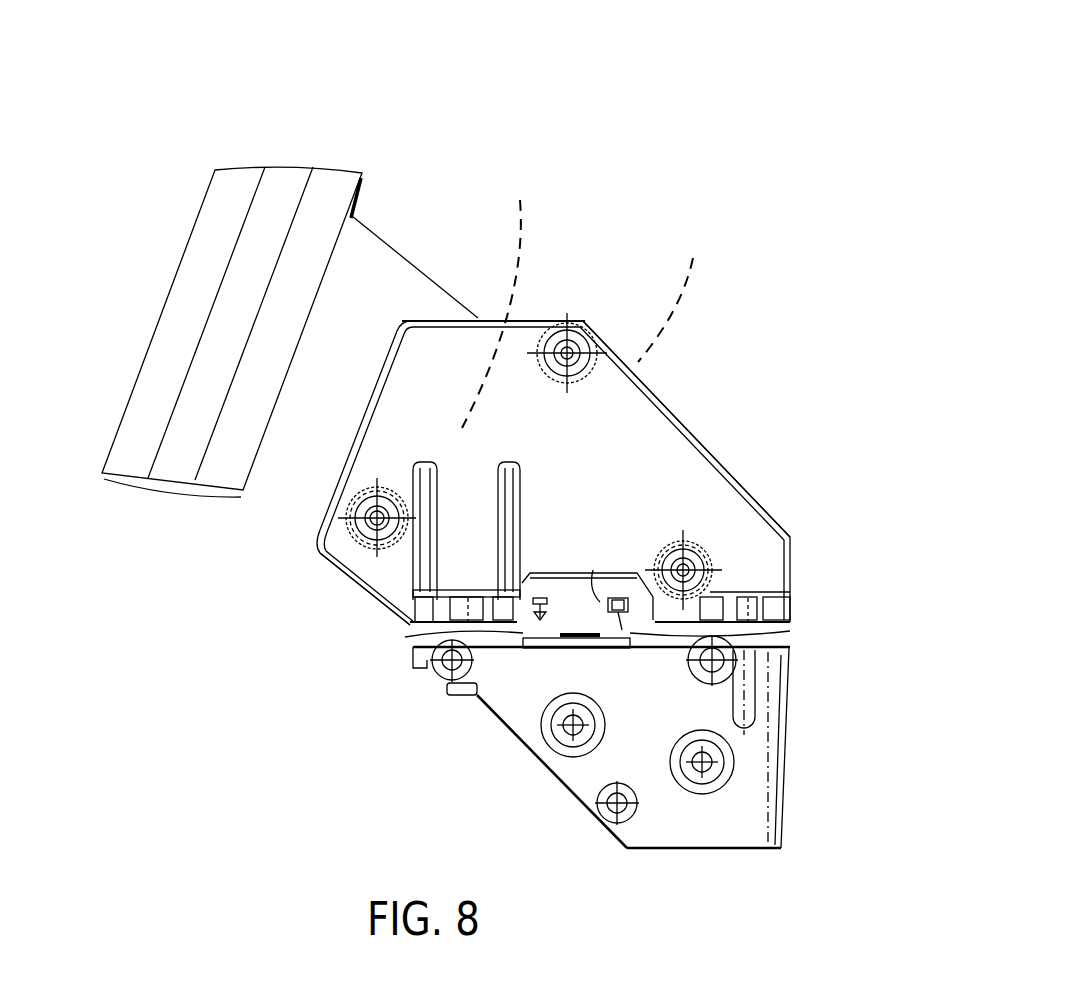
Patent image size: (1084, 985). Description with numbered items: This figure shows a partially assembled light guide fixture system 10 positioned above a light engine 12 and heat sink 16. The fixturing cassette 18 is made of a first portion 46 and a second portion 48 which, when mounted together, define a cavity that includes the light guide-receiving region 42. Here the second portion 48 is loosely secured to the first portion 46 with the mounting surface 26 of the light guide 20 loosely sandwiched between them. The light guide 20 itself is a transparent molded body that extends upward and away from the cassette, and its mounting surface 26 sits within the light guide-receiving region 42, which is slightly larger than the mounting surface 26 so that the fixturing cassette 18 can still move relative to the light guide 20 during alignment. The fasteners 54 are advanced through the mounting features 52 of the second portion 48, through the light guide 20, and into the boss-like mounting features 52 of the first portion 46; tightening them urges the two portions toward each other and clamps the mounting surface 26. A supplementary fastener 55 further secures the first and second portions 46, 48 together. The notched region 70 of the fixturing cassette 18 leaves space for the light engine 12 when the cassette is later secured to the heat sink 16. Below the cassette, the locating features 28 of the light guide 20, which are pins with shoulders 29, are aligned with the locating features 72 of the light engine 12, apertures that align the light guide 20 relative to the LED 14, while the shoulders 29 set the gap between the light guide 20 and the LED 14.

The light guide fixture system 10 is at (526, 35).
The light engine 12 is at (540, 652).
The light emitting diode (LED) 14 is at (585, 650).
The heat sink 16 is at (782, 753).
The fixturing cassette 18 is at (690, 440).
The light guide 20 is at (330, 170).
The mounting surface 26 is at (430, 300).
The locating features 28 is at (790, 631).
The shoulder 29 is at (543, 607).
The light guide-receiving region 42 is at (497, 298).
The first portion 46 is at (675, 294).
The second portion 48 is at (602, 418).
The mounting features 52 is at (355, 507).
The fastener 54 is at (372, 510).
The additional fastener 55 is at (582, 368).
The notched region 70 is at (612, 574).
The locating features 72 is at (395, 628).